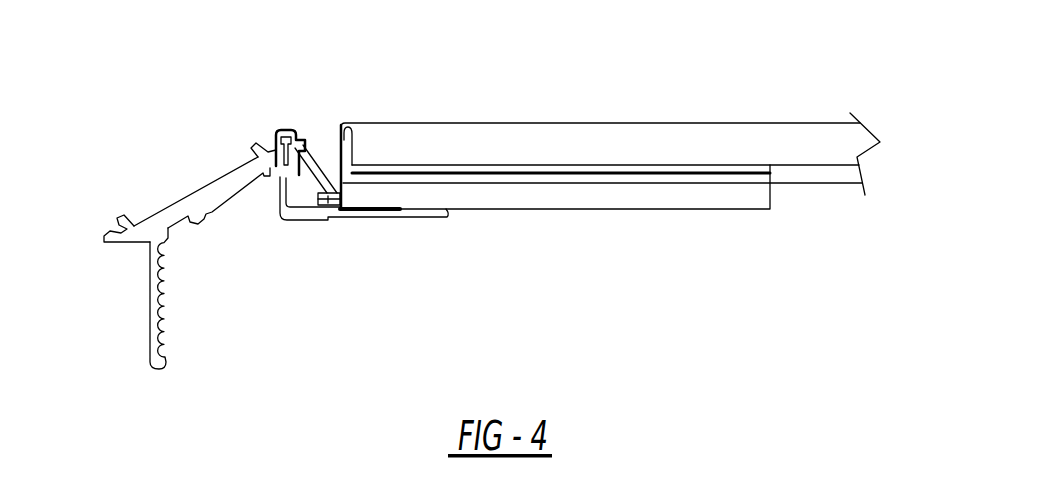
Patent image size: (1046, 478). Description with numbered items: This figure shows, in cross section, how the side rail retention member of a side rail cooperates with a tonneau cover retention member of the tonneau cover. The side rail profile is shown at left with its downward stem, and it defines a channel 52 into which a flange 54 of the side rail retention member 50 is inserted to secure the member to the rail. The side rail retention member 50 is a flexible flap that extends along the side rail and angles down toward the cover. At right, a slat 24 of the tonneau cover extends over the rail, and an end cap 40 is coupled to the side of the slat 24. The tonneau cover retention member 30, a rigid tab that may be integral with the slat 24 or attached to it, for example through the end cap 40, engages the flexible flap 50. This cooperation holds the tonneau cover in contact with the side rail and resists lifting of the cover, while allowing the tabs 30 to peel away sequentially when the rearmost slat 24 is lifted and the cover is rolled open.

The slat 24 is at (622, 122).
The tonneau cover retention member 30 is at (328, 205).
The end cap 40 is at (340, 134).
The side rail retention member 50 is at (315, 138).
The channel 52 is at (268, 136).
The flange 54 is at (279, 170).